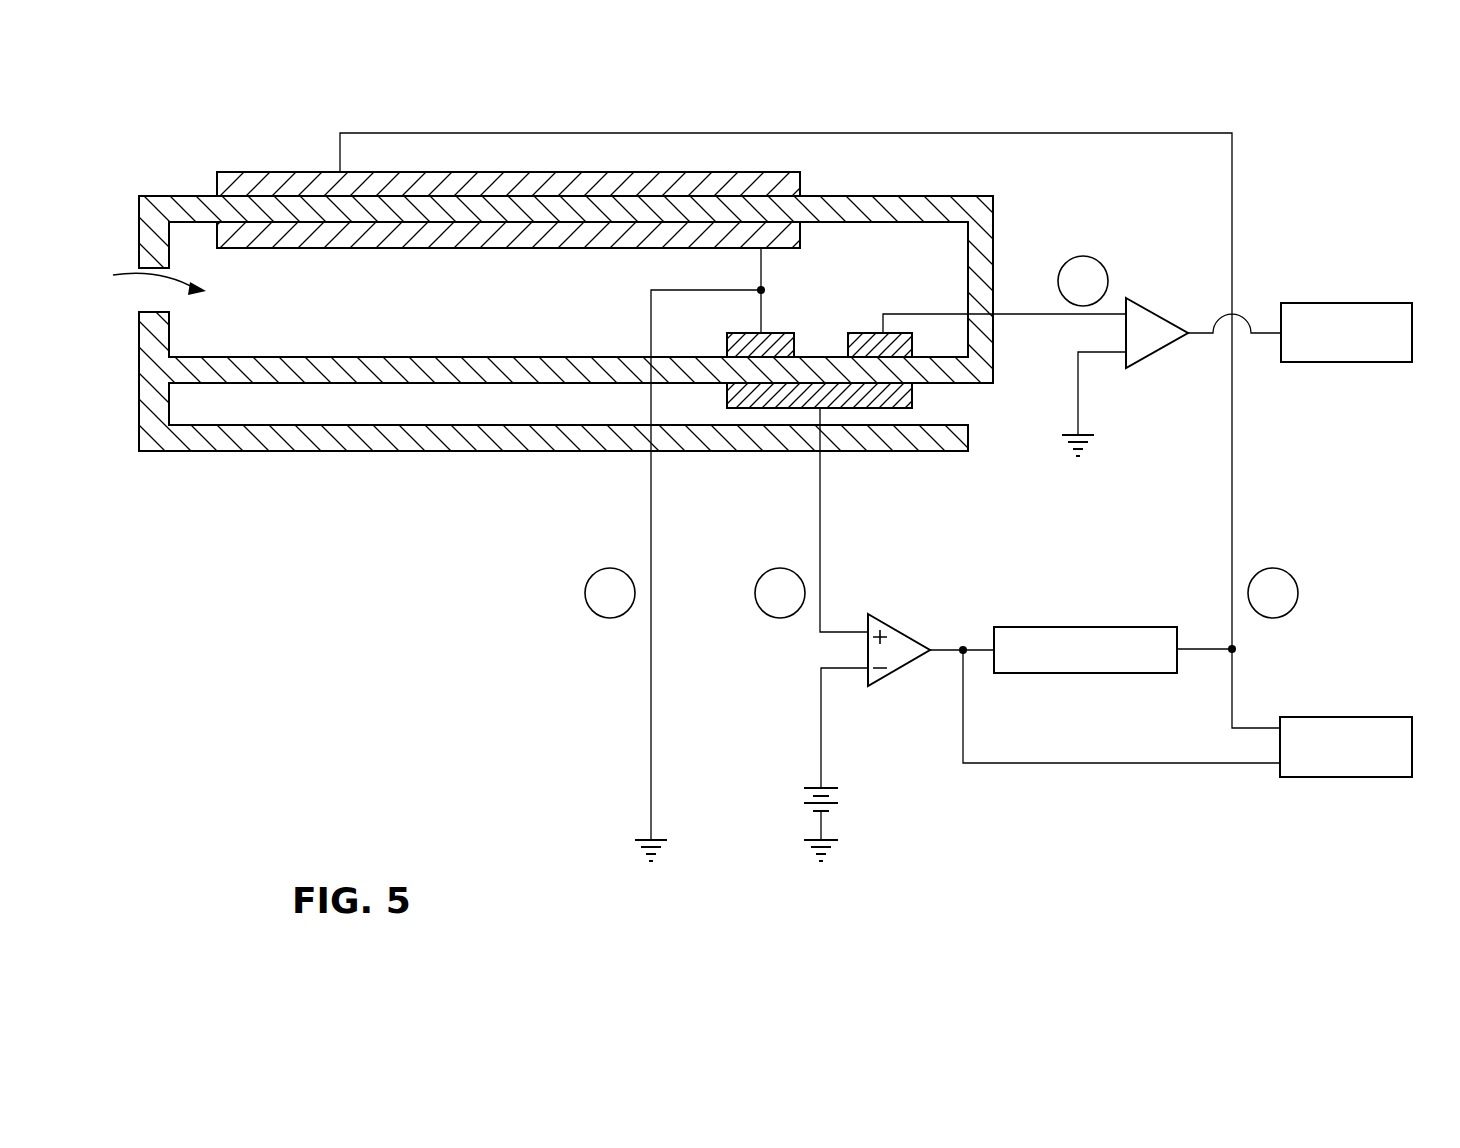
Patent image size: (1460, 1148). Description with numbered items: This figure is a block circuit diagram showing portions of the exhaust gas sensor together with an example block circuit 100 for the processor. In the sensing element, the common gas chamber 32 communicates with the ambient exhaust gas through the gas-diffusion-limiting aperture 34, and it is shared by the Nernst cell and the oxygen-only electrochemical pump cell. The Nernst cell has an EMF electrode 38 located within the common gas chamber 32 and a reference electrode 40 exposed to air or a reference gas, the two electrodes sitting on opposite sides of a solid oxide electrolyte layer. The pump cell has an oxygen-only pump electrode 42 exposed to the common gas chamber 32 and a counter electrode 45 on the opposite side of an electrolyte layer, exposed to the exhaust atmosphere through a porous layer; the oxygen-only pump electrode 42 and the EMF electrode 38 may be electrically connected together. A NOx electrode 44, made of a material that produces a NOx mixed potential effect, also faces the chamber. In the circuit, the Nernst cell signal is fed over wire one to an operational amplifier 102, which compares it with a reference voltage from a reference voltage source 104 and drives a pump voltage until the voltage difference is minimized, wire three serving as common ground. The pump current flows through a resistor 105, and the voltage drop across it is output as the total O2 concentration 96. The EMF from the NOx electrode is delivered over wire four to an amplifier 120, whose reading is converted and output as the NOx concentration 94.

The common gas chamber 32 is at (143, 279).
The gas-diffusion-limiting aperture 34 is at (136, 306).
The EMF electrode 38 is at (790, 338).
The reference electrode 40 is at (905, 408).
The oxygen-only pump electrode 42 is at (227, 232).
The NOx electrode 44 is at (865, 333).
The counter electrode 45 is at (316, 175).
The NOx concentration 94 is at (1412, 308).
The total O2 concentration 96 is at (1412, 773).
The block circuit 100 is at (1040, 878).
The operational amplifier 102 is at (893, 675).
The reference voltage source 104 is at (833, 803).
The resistor 105 is at (1177, 672).
The amplifier 120 is at (1153, 312).